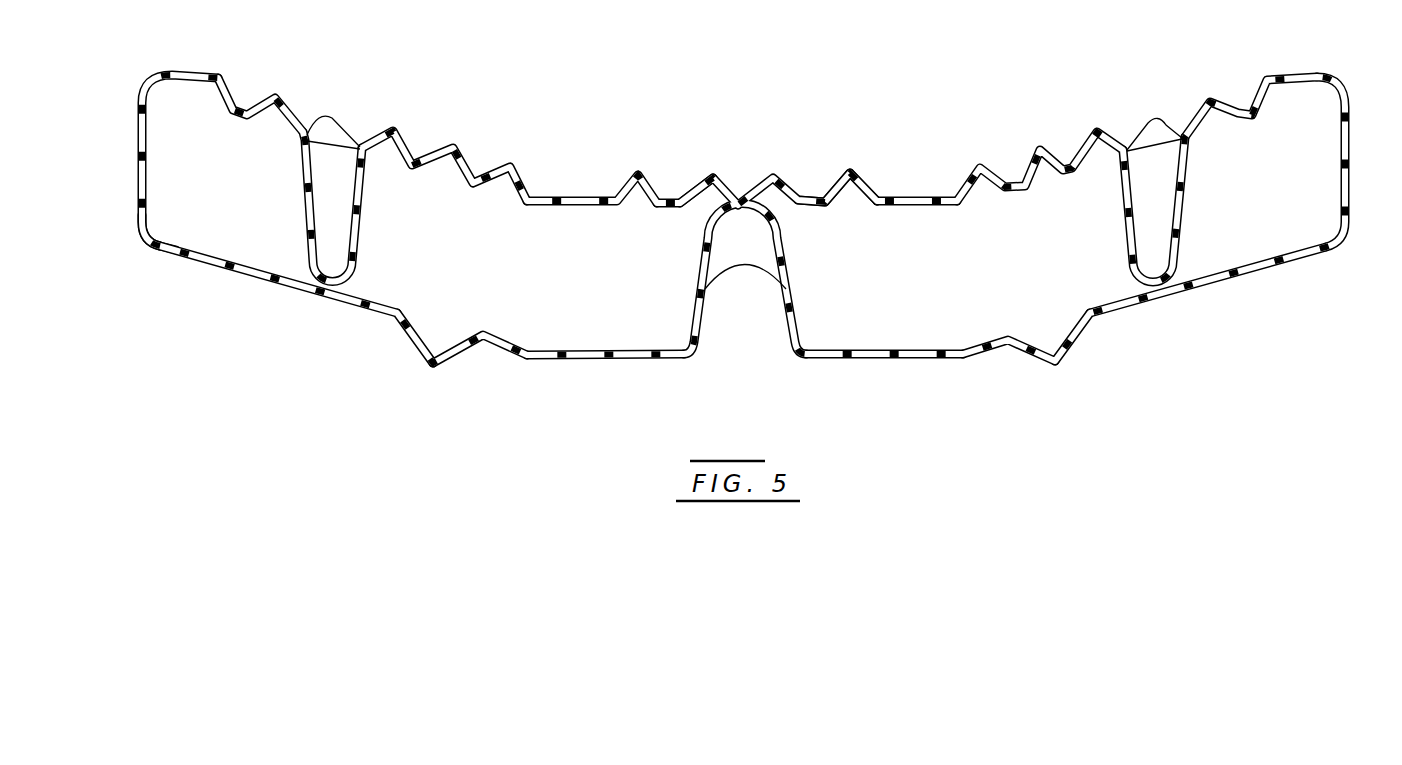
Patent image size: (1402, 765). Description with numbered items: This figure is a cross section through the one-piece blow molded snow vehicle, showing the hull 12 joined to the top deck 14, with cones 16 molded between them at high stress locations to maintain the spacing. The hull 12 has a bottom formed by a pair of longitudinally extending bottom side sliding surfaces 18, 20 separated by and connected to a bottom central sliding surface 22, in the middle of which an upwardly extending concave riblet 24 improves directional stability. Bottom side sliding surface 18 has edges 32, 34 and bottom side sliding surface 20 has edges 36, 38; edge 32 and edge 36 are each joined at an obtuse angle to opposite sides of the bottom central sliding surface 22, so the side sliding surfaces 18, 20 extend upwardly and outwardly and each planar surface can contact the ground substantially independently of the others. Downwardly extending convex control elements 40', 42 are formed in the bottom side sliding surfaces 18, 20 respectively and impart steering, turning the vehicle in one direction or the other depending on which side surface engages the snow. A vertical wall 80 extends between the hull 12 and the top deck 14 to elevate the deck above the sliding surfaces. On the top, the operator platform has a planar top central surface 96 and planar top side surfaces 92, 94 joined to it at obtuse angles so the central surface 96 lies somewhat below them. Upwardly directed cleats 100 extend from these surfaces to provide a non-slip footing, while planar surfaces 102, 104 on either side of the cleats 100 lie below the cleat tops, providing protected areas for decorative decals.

The hull 12 is at (607, 357).
The top deck 14 is at (881, 197).
The cone 16 is at (303, 209).
The bottom side sliding surface 18 is at (367, 316).
The bottom side sliding surface 20 is at (1256, 278).
The bottom central sliding surface 22 is at (915, 358).
The concave riblet 24 is at (704, 320).
The edge 32 is at (526, 358).
The edge 34 is at (153, 248).
The edge 36 is at (958, 358).
The edge 38 is at (1340, 233).
The control element 40' is at (399, 362).
The control element 42 is at (1056, 365).
The vertical wall 80 is at (138, 160).
The top side surface 92 is at (397, 128).
The top side surface 94 is at (1100, 130).
The top central surface 96 is at (702, 187).
The cleat 100 is at (281, 104).
The planar surface 102 is at (575, 197).
The planar surface 104 is at (935, 200).